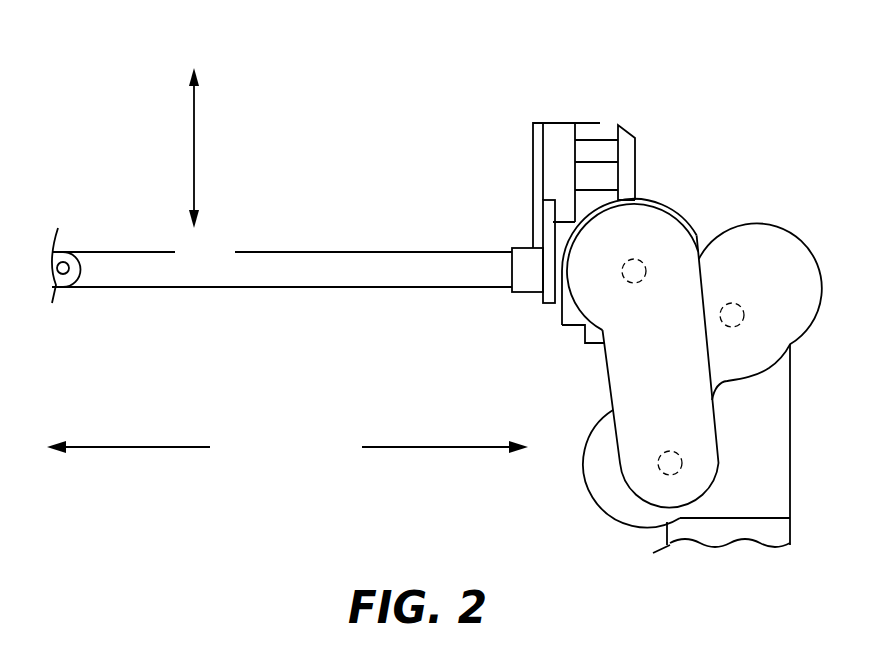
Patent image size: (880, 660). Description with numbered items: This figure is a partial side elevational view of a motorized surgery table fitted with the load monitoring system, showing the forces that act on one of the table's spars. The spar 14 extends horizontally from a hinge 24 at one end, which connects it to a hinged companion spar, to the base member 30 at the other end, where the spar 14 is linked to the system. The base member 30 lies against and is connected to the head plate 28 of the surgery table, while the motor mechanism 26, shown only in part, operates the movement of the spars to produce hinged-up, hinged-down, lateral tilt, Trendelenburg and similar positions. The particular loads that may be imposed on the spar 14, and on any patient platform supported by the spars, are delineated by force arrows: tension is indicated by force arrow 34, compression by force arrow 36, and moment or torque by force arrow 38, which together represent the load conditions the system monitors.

The spar 14 is at (315, 267).
The hinge 24 is at (62, 258).
The motor mechanism 26 is at (707, 244).
The head plate 28 is at (533, 128).
The base member 30 is at (548, 210).
The force arrow 34 is at (172, 448).
The force arrow 36 is at (380, 448).
The force arrow 38 is at (195, 120).